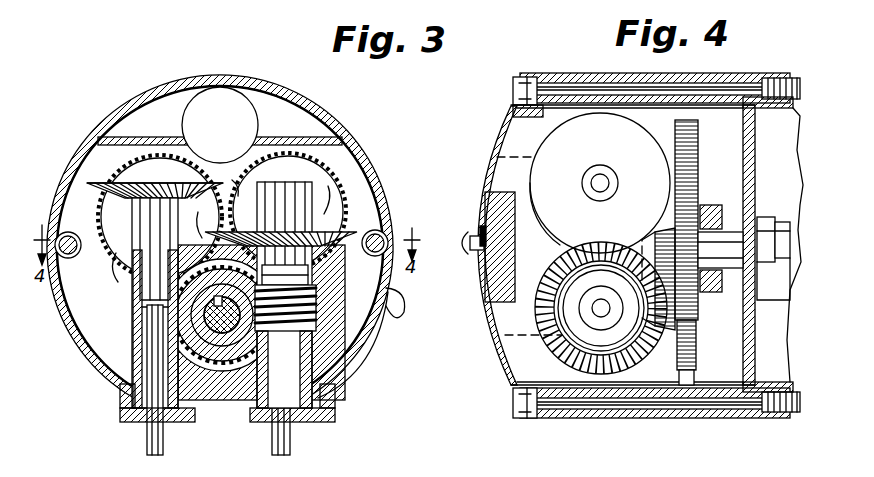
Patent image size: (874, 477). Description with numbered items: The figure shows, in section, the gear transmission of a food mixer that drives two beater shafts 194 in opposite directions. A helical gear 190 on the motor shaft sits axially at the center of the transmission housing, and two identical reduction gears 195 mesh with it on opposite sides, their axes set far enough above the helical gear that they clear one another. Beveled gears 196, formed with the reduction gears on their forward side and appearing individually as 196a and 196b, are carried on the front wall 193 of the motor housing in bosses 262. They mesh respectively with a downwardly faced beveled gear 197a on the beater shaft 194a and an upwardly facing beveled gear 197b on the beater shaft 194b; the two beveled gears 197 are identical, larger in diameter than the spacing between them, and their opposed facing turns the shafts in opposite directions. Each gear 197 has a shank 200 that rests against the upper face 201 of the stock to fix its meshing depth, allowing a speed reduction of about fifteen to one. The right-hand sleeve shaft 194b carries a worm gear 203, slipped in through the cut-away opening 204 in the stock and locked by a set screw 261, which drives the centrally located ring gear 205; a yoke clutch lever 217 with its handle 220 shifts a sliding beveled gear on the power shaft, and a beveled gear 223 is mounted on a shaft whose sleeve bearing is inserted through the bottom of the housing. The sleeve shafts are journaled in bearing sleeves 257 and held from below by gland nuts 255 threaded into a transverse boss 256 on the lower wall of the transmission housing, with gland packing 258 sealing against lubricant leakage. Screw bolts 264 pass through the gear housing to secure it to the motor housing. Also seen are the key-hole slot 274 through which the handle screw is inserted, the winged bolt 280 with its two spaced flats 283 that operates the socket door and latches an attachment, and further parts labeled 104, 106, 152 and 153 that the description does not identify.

In FIG. 4, the frame 104 is at (784, 414).
In FIG. 3, the cross bar 106 is at (358, 170).
In FIG. 4, the cross bar 106 is at (592, 420).
In FIG. 4, the bearing boss 152 is at (772, 216).
In FIG. 4, the bearing boss flange 153 is at (774, 281).
In FIG. 3, the helical gear 190 is at (224, 176).
In FIG. 3, the front wall 193 is at (360, 190).
In FIG. 4, the front wall 193 is at (756, 162).
In FIG. 3, the beater shafts 194 is at (218, 380).
In FIG. 3, the beater shaft 194a is at (128, 383).
In FIG. 4, the beater shaft 194a is at (600, 201).
In FIG. 3, the beater shaft 194b is at (326, 386).
In FIG. 4, the beater shaft 194b is at (592, 312).
In FIG. 3, the reduction gears 195 is at (222, 216).
In FIG. 4, the reduction gears 195 is at (700, 128).
In FIG. 3, the beveled gears 196 is at (95, 196).
In FIG. 4, the bevel gear 196a is at (680, 122).
In FIG. 4, the bevel gear 196b is at (640, 372).
In FIG. 4, the beveled gears 197 is at (562, 248).
In FIG. 3, the downwardly faced beveled gear 197a is at (92, 184).
In FIG. 4, the downwardly faced beveled gear 197a is at (600, 183).
In FIG. 3, the upwardly facing beveled gear 197b is at (345, 240).
In FIG. 4, the upwardly facing beveled gear 197b is at (545, 330).
In FIG. 3, the shanks 200 is at (112, 262).
In FIG. 3, the upper face of the stock 201 is at (204, 220).
In FIG. 3, the worm gear 203 is at (310, 324).
In FIG. 3, the cut-away opening 204 is at (310, 280).
In FIG. 3, the ring gear 205 is at (140, 312).
In FIG. 3, the yoke clutch lever 217 is at (366, 332).
In FIG. 3, the handle 220 is at (406, 304).
In FIG. 4, the beveled gear 223 is at (706, 204).
In FIG. 3, the gland nuts 255 is at (124, 424).
In FIG. 3, the transverse boss 256 is at (332, 402).
In FIG. 3, the bearing sleeves 257 is at (135, 356).
In FIG. 3, the gland packing 258 is at (120, 400).
In FIG. 3, the set screw 261 is at (318, 294).
In FIG. 4, the bosses 262 is at (705, 166).
In FIG. 3, the screw bolts 264 is at (72, 256).
In FIG. 4, the screw bolts 264 is at (556, 74).
In FIG. 4, the slot 274 is at (472, 236).
In FIG. 4, the winged bolt 280 is at (480, 248).
In FIG. 4, the spaced flats 283 is at (478, 254).